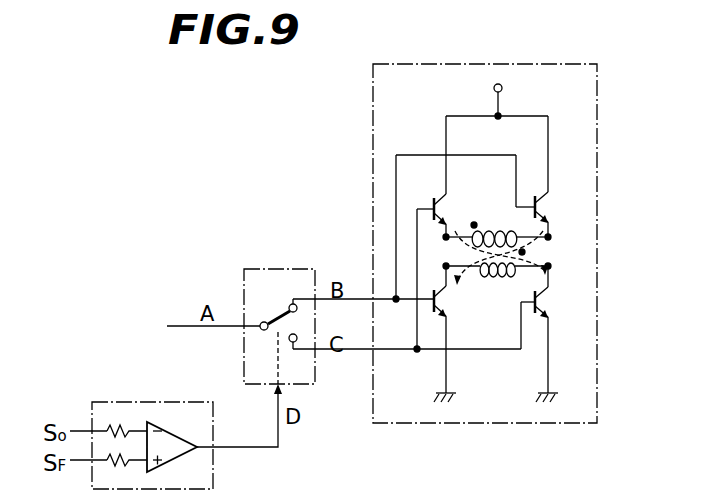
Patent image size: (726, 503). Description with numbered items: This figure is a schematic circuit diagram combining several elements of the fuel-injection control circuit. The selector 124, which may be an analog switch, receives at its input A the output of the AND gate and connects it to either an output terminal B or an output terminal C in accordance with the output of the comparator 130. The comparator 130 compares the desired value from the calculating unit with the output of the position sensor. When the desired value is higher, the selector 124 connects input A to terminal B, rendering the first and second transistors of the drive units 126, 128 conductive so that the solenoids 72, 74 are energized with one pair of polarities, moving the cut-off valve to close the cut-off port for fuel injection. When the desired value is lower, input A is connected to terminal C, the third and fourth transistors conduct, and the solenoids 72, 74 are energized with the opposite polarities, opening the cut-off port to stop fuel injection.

The solenoid 72 is at (486, 230).
The solenoid 74 is at (491, 281).
The selector 124 is at (268, 268).
The drive unit 126 is at (481, 51).
The drive unit 128 is at (485, 243).
The comparator 130 is at (166, 401).